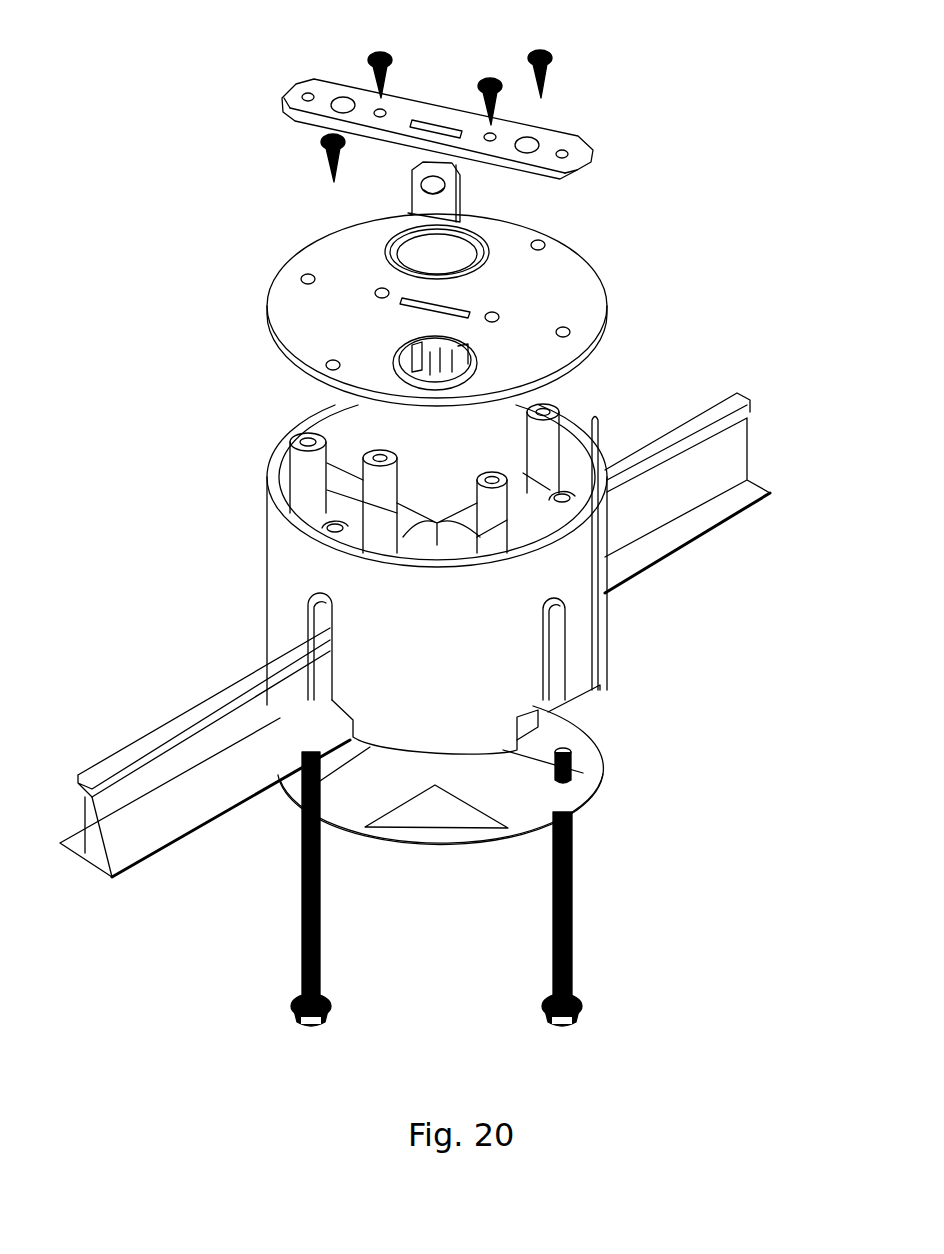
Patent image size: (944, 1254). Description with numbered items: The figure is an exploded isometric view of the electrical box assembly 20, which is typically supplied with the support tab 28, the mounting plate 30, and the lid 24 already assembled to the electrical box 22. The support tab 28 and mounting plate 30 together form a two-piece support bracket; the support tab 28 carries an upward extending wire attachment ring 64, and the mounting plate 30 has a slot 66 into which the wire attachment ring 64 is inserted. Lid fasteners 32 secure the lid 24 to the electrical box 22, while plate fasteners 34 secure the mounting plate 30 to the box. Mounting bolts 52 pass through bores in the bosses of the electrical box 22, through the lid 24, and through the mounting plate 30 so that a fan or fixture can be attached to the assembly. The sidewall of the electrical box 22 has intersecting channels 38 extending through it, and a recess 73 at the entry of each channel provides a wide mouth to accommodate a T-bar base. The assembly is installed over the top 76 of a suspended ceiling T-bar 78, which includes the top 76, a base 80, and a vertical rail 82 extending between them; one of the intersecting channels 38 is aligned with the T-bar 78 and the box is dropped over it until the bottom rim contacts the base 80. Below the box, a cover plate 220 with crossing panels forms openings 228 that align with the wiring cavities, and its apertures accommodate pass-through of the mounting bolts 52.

The electrical box assembly 20 is at (170, 368).
The electrical box 22 is at (598, 620).
The lid 24 is at (606, 310).
The support tab 28 is at (462, 194).
The mounting plate 30 is at (596, 158).
The lid fasteners 32 is at (556, 60).
The plate fasteners 34 is at (396, 62).
The intersecting channels 38 is at (306, 622).
The mounting bolts 52 is at (574, 904).
The wire attachment ring 64 is at (428, 183).
The slot 66 is at (433, 302).
The recess 73 is at (593, 697).
The top 76 is at (153, 737).
The suspended ceiling T-bar 78 is at (748, 442).
The base 80 is at (160, 830).
The vertical rail 82 is at (169, 804).
The cover plate 220 is at (600, 752).
The openings 228 is at (436, 824).